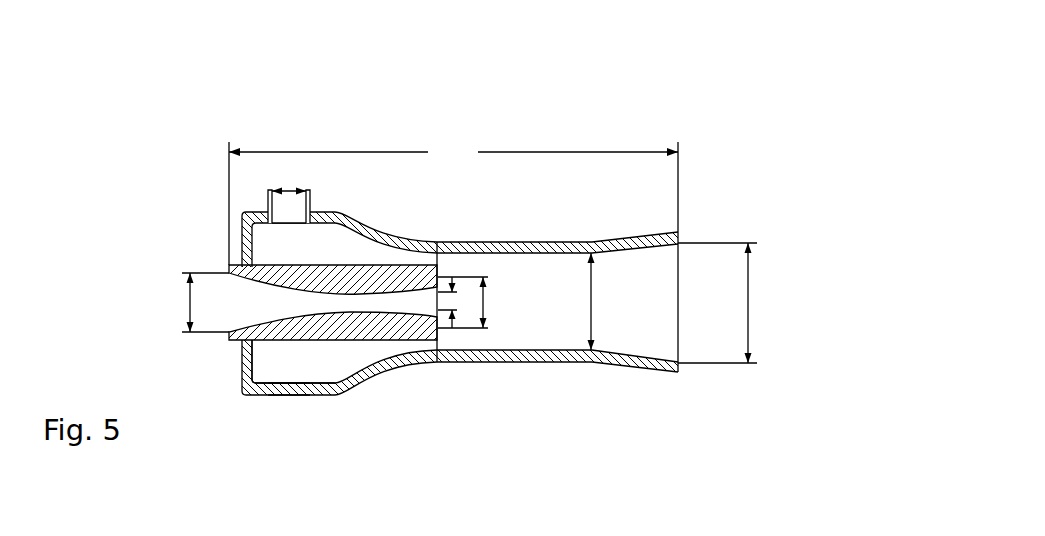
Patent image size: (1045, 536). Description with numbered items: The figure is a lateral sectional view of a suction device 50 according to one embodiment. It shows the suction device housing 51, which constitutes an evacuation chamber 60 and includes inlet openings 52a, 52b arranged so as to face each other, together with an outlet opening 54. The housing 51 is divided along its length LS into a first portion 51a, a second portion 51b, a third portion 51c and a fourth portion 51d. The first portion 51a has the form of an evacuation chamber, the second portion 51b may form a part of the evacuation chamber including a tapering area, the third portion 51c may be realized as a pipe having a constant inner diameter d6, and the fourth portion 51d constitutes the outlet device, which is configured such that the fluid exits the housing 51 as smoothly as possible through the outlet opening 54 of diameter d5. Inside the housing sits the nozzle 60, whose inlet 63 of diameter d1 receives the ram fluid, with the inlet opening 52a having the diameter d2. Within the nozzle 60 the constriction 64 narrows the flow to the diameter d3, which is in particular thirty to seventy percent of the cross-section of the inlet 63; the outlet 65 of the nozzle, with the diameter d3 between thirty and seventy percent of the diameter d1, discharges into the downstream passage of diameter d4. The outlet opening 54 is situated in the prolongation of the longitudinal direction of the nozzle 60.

The venturi mixing device 50 is at (617, 130).
The suction device housing 51 is at (568, 232).
The first portion 51a is at (275, 397).
The second portion 51b is at (365, 380).
The third portion 51c is at (547, 362).
The fourth portion 51d is at (646, 366).
The inlet opening 52a is at (277, 202).
The inlet opening 52b is at (287, 400).
The outlet opening 54 is at (678, 265).
The nozzle 60 is at (292, 347).
The inlet 63 is at (237, 290).
The constriction 64 is at (335, 300).
The outlet 65 is at (423, 306).
The length of housing LS is at (453, 200).
The diameter d1 is at (192, 302).
The inlet port diameter d2 is at (287, 175).
The diameter d3 is at (452, 305).
The nozzle outlet diameter d4 is at (538, 196).
The housing outlet diameter d5 is at (717, 303).
The housing inner diameter d6 is at (618, 301).